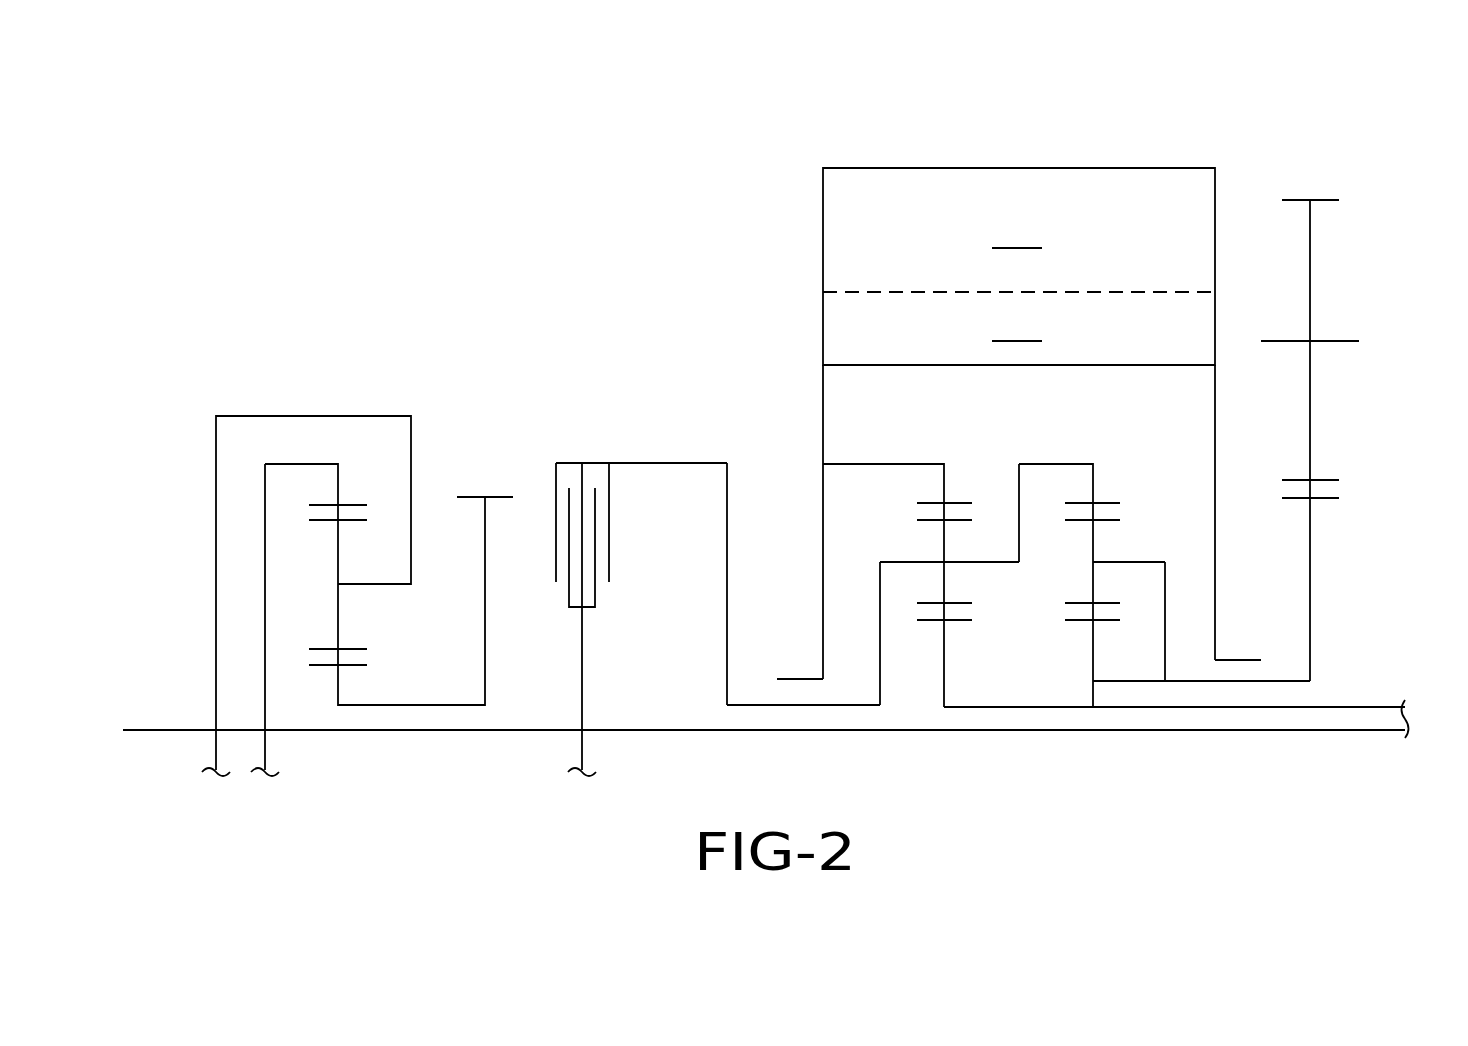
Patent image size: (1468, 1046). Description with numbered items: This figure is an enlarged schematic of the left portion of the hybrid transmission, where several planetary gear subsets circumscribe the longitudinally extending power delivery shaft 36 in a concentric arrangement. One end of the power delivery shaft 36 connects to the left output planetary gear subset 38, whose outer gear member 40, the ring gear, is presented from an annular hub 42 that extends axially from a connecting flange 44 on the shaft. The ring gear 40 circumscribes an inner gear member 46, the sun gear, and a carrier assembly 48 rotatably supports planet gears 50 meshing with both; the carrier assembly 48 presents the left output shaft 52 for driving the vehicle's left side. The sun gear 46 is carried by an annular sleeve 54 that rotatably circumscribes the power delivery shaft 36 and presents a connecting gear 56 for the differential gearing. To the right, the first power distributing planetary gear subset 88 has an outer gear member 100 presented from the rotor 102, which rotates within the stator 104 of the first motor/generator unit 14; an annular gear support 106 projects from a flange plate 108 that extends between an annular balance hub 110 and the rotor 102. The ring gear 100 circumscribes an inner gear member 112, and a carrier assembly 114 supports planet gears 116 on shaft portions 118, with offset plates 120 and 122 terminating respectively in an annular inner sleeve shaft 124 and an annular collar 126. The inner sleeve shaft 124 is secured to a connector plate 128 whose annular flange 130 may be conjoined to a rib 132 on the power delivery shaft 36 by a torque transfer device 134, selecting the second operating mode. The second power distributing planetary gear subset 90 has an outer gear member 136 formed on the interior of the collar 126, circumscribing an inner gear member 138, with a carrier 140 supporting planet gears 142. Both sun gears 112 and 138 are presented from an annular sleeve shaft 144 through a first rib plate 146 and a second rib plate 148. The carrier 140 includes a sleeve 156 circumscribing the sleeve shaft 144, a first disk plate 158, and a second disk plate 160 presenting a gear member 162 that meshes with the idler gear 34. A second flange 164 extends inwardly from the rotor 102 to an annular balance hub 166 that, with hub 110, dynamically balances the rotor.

The first motor/generator unit 14 is at (1019, 221).
The idler gear 34 is at (1311, 395).
The power delivery shaft 36 is at (402, 732).
The left output planetary gear subset 38 is at (336, 549).
The outer gear member 40 is at (358, 504).
The annular hub 42 is at (308, 463).
The connecting flange 44 is at (266, 597).
The inner gear member 46 is at (325, 666).
The carrier assembly 48 is at (214, 530).
The planet gears 50 is at (339, 616).
The output shaft 52 is at (148, 732).
The annular sleeve 54 is at (440, 704).
The connecting gear 56 is at (470, 496).
The first power distributing planetary gear subset 88 is at (929, 542).
The second power distributing planetary gear subset 90 is at (1084, 542).
The outer gear member 100 is at (963, 503).
The rotor 102 is at (1019, 318).
The stator 104 is at (1017, 237).
The annular gear support 106 is at (860, 463).
The flange plate 108 is at (822, 515).
The annular balance hub 110 is at (787, 678).
The inner gear member 112 is at (928, 621).
The carrier assembly 114 is at (878, 560).
The planet gears 116 is at (945, 535).
The shaft portions 118 is at (1000, 562).
The offset plate 120 is at (879, 648).
The offset plate 122 is at (1021, 497).
The annular inner sleeve shaft 124 is at (787, 706).
The annular collar 126 is at (1038, 463).
The connector plate 128 is at (727, 628).
The annular flange 130 is at (672, 462).
The rib 132 is at (583, 677).
The torque transfer device 134 is at (614, 534).
The outer gear member 136 is at (1117, 503).
The inner gear member 138 is at (1063, 621).
The carrier 140 is at (1101, 586).
The planet gears 142 is at (1094, 575).
The annular sleeve shaft 144 is at (1360, 706).
The first rib plate 146 is at (945, 690).
The second rib plate 148 is at (1094, 680).
The sleeve 156 is at (1291, 681).
The first disk plate 158 is at (1166, 595).
The second disk plate 160 is at (1311, 607).
The gear member 162 is at (1322, 499).
The second flange 164 is at (1216, 432).
The annular balance hub 166 is at (1236, 659).